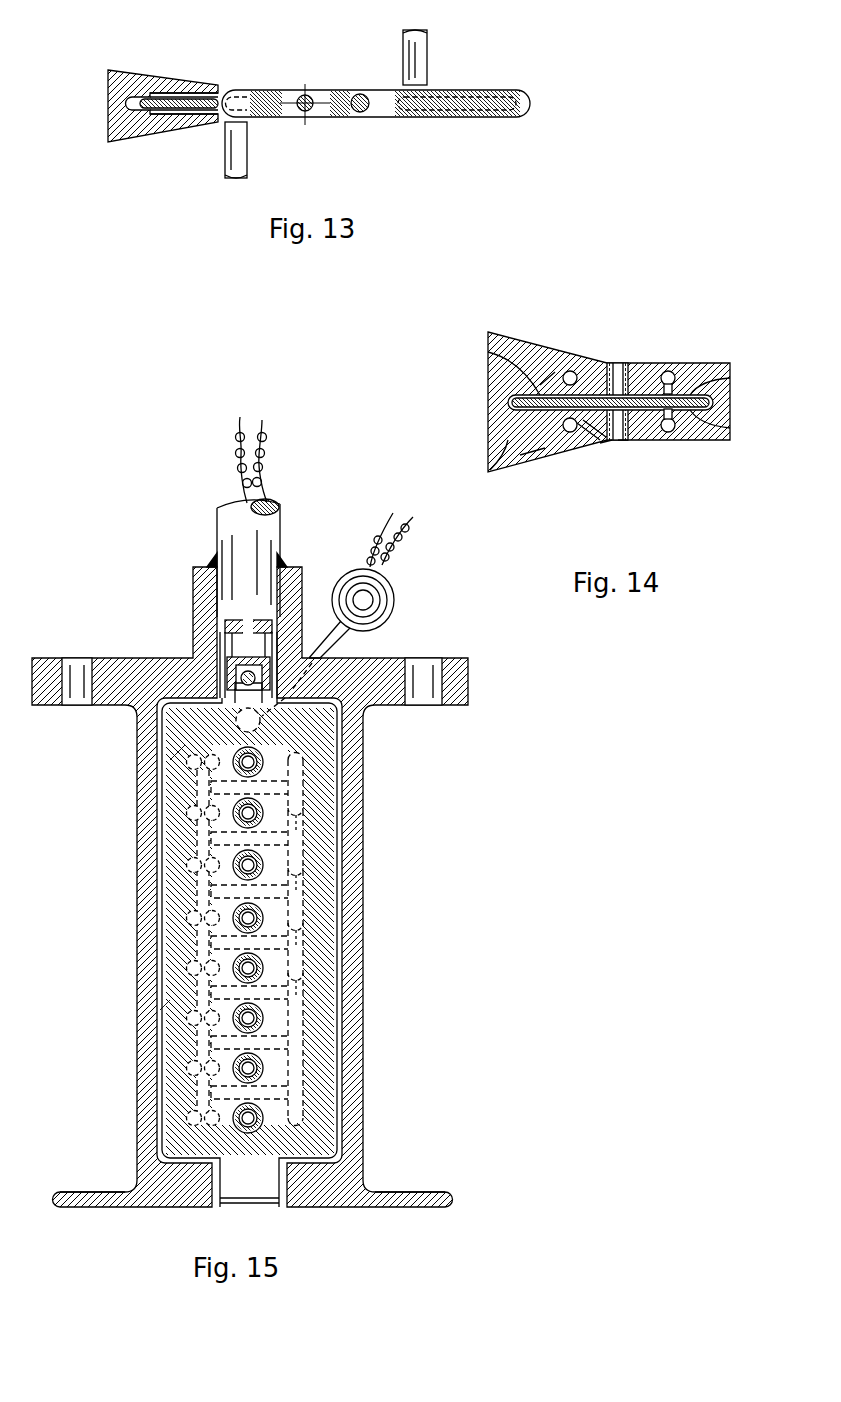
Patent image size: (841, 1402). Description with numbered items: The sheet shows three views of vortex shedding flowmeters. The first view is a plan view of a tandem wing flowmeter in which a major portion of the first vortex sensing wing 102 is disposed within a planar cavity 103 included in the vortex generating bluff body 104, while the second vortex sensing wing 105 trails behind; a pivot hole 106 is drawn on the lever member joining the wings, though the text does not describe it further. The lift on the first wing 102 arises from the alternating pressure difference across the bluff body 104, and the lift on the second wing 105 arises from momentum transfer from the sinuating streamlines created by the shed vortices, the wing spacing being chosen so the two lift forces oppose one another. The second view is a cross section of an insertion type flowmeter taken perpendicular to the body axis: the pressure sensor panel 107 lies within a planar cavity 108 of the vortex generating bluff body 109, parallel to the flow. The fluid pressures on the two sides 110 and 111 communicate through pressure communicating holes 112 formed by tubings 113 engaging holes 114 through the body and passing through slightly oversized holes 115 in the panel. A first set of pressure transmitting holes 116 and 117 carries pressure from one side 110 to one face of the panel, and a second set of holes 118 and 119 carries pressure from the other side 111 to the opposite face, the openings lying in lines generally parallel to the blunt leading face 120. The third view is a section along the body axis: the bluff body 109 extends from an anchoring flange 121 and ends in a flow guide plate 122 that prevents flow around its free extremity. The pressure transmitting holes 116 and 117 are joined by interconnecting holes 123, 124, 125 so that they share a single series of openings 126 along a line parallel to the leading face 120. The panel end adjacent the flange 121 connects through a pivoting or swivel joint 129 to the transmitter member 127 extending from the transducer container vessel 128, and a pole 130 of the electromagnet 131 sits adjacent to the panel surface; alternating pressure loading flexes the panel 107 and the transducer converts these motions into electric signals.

In FIG. 13, the first vortex sensing wing 102 is at (193, 115).
In FIG. 13, the planar cavity 103 is at (178, 106).
In FIG. 13, the vortex generating bluff body 104 is at (147, 82).
In FIG. 13, the second vortex sensing wing 105 is at (457, 110).
In FIG. 13, the pivot hole 106 is at (343, 88).
In FIG. 14, the pressure sensor panel 107 is at (488, 338).
In FIG. 15, the pressure sensor panel 107 is at (183, 933).
In FIG. 14, the planar cavity 108 is at (500, 352).
In FIG. 15, the planar cavity 108 is at (177, 752).
In FIG. 14, the vortex generating bluff body 109 is at (508, 442).
In FIG. 15, the vortex generating bluff body 109 is at (155, 1003).
In FIG. 14, the one side of the bluff body 110 is at (543, 390).
In FIG. 14, the other side of the bluff body 111 is at (537, 463).
In FIG. 14, the pressure communicating holes 112 is at (625, 370).
In FIG. 15, the pressure communicating holes 112 is at (258, 918).
In FIG. 14, the tubings 113 is at (612, 367).
In FIG. 14, the holes 114 is at (618, 440).
In FIG. 14, the oversized holes 115 is at (600, 443).
In FIG. 14, the pressure transmitting holes 116 is at (563, 372).
In FIG. 15, the pressure transmitting holes 116 is at (190, 1120).
In FIG. 14, the pressure transmitting holes 117 is at (700, 370).
In FIG. 15, the pressure transmitting holes 117 is at (305, 1003).
In FIG. 14, the pressure transmitting holes 118 is at (560, 448).
In FIG. 14, the pressure transmitting holes 119 is at (707, 440).
In FIG. 14, the blunt leading face 120 is at (508, 402).
In FIG. 15, the blunt leading face 120 is at (138, 823).
In FIG. 15, the anchoring flange 121 is at (47, 706).
In FIG. 15, the flow guide plate 122 is at (100, 1193).
In FIG. 15, the interconnecting hole 123 is at (198, 947).
In FIG. 15, the interconnecting hole 124 is at (270, 1053).
In FIG. 15, the interconnecting hole 125 is at (305, 1038).
In FIG. 15, the openings 126 is at (217, 870).
In FIG. 15, the transmitter member 127 is at (247, 645).
In FIG. 15, the transducer container vessel 128 is at (242, 583).
In FIG. 15, the pivoting or swivel joint 129 is at (240, 683).
In FIG. 15, the pole 130 is at (257, 727).
In FIG. 15, the electromagnet 131 is at (395, 582).